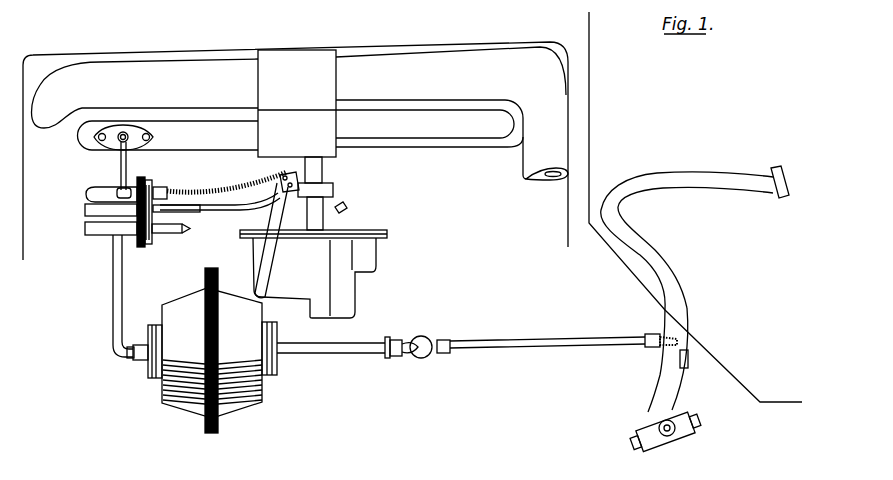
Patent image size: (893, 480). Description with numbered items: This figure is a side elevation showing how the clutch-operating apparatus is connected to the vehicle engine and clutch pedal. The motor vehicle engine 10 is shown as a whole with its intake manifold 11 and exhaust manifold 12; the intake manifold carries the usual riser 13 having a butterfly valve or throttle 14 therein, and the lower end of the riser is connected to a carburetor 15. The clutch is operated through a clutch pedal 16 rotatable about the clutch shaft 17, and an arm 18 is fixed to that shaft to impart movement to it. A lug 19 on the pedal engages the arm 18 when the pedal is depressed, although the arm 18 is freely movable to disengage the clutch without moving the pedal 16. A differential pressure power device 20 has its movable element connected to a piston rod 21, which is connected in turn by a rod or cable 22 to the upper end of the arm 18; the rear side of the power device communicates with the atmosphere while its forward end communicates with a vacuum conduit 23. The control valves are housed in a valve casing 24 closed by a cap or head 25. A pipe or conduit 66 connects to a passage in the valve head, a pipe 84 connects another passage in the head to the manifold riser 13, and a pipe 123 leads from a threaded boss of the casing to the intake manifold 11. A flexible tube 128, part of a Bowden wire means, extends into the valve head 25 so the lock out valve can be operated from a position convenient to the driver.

The motor vehicle engine 10 is at (578, 75).
The intake manifold 11 is at (448, 134).
The exhaust manifold 12 is at (480, 58).
The riser 13 is at (333, 161).
The butterfly valve or throttle 14 is at (313, 234).
The carburetor 15 is at (357, 302).
The clutch pedal 16 is at (668, 268).
The clutch shaft 17 is at (660, 433).
The arm 18 is at (667, 380).
The lug 19 is at (684, 358).
The power device 20 is at (248, 405).
The piston rod 21 is at (332, 356).
The rod or cable 22 is at (522, 342).
The vacuum conduit 23 is at (113, 304).
The valve casing 24 is at (95, 182).
The cap or head 25 is at (144, 244).
The pipe or conduit 66 is at (227, 175).
The pipe 84 is at (216, 210).
The pipe 123 is at (130, 162).
The flexible tube 128 is at (270, 170).